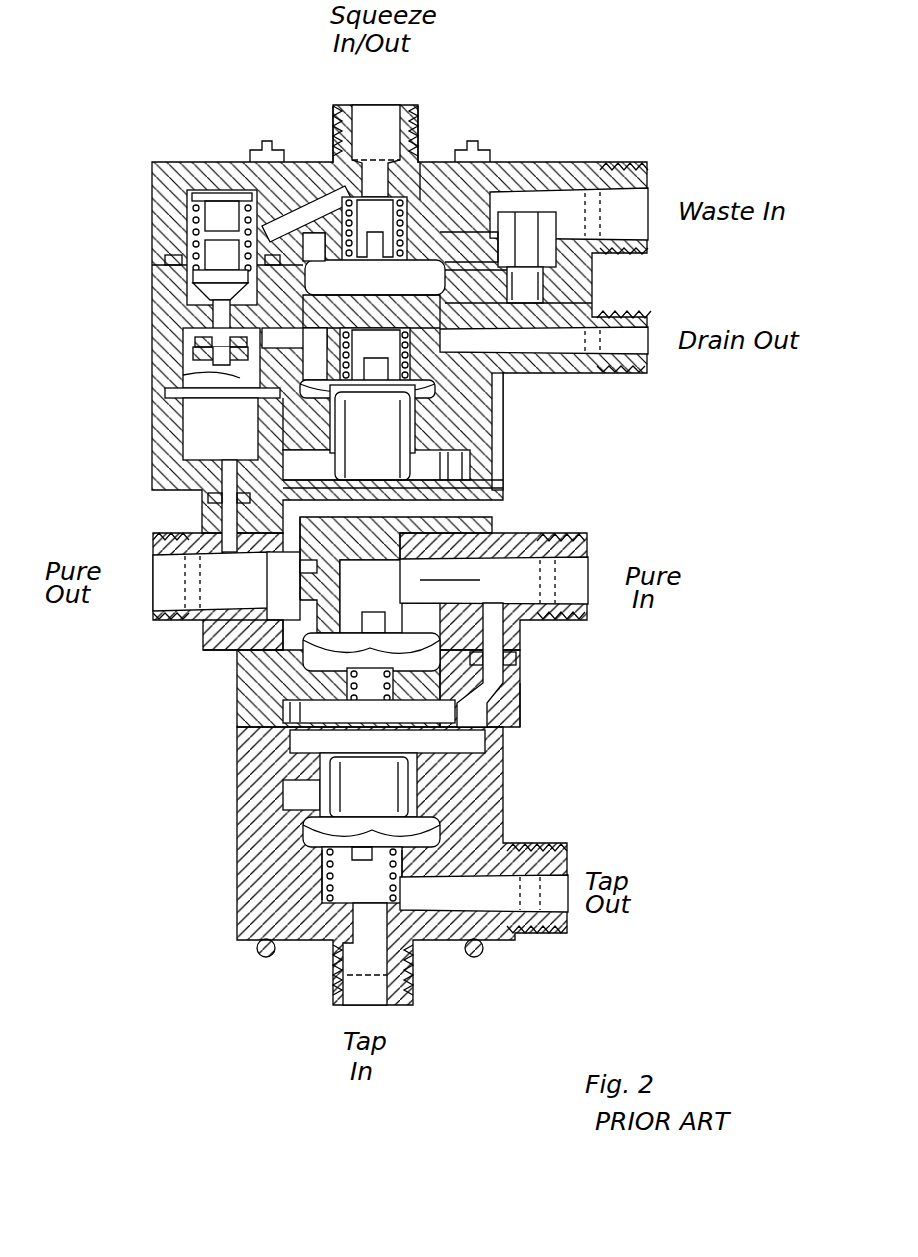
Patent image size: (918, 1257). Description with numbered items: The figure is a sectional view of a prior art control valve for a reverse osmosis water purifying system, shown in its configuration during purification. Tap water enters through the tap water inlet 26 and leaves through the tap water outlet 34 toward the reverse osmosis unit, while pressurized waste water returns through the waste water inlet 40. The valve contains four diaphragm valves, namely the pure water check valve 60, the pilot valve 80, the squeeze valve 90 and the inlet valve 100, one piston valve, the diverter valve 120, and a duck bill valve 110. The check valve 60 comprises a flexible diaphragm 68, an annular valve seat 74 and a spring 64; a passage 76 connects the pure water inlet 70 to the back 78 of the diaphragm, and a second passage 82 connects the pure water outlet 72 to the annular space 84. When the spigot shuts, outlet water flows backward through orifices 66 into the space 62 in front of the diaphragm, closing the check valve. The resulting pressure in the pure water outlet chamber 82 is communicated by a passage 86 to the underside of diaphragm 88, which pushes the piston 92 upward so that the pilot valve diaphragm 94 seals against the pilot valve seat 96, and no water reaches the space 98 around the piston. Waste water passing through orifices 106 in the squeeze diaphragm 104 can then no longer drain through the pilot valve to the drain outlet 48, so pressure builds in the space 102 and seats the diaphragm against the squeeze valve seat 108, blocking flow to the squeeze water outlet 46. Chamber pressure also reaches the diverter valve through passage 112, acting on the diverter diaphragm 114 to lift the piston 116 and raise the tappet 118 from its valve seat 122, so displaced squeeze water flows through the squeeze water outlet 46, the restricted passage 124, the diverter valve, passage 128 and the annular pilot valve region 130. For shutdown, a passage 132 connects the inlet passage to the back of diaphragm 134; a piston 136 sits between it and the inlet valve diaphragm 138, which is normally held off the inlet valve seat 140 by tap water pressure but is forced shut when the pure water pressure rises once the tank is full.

The tap water inlet 26 is at (415, 996).
The tap water outlet 34 is at (545, 853).
The waste water inlet 40 is at (620, 170).
The squeeze water outlet 46 is at (418, 120).
The drain outlet 48 is at (620, 322).
The pure water check valve 60 is at (310, 663).
The space 62 is at (470, 700).
The spring 64 is at (337, 723).
The orifices 66 is at (303, 667).
The flexible diaphragm 68 is at (371, 651).
The pure water inlet 70 is at (560, 535).
The pure water outlet 72 is at (160, 617).
The annular valve seat 74 is at (465, 652).
The passage 76 is at (487, 583).
The back of diaphragm 78 is at (367, 612).
The pilot valve 80 is at (470, 407).
The second passage / pure water outlet chamber 82 is at (249, 586).
The annular space 84 is at (205, 650).
The passage 86 is at (288, 537).
The diaphragm 88 is at (497, 517).
The squeeze valve 90 is at (428, 248).
The piston 92 is at (372, 432).
The pilot valve diaphragm 94 is at (305, 424).
The pilot valve seat 96 is at (350, 360).
The space 98 is at (455, 465).
The inlet valve 100 is at (320, 850).
The space 102 is at (374, 264).
The squeeze diaphragm 104 is at (374, 229).
The orifices 106 is at (361, 311).
The squeeze valve seat 108 is at (420, 200).
The duck bill valve 110 is at (545, 215).
The passage 112 is at (230, 476).
The diverter diaphragm 114 is at (223, 392).
The piston 116 is at (212, 372).
The tappet 118 is at (212, 289).
The diverter valve 120 is at (190, 300).
The valve seat 122 is at (208, 338).
The restricted passage 124 is at (345, 160).
The passage 128 is at (294, 354).
The annular pilot valve region 130 is at (518, 294).
The passage 132 is at (478, 705).
The diaphragm 134 is at (307, 737).
The piston 136 is at (405, 780).
The inlet valve diaphragm 138 is at (340, 828).
The inlet valve seat 140 is at (335, 855).